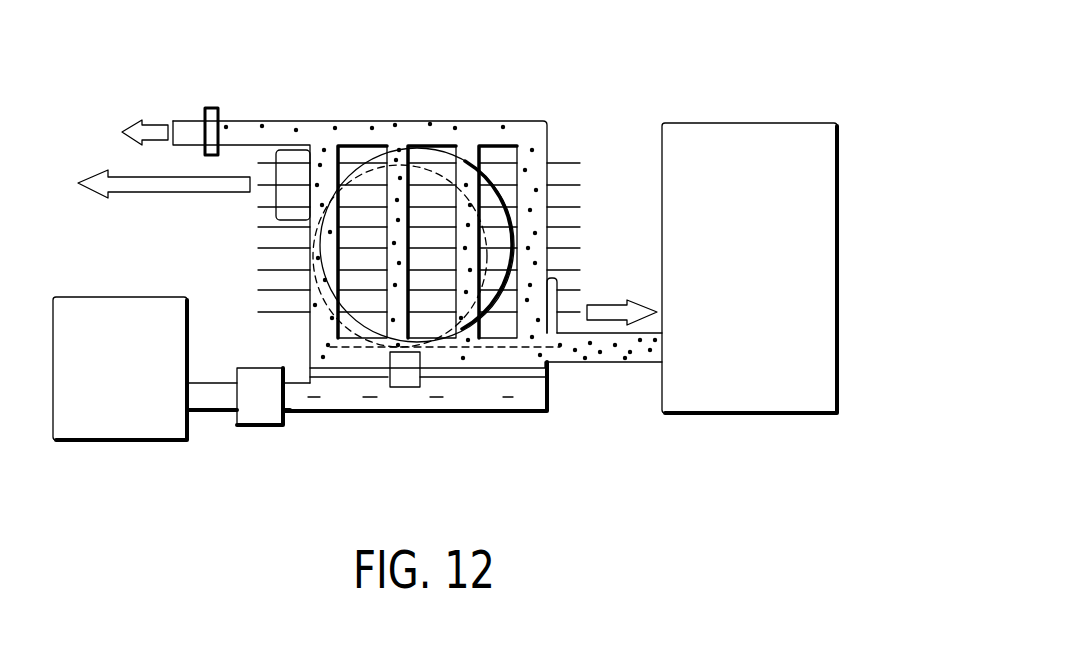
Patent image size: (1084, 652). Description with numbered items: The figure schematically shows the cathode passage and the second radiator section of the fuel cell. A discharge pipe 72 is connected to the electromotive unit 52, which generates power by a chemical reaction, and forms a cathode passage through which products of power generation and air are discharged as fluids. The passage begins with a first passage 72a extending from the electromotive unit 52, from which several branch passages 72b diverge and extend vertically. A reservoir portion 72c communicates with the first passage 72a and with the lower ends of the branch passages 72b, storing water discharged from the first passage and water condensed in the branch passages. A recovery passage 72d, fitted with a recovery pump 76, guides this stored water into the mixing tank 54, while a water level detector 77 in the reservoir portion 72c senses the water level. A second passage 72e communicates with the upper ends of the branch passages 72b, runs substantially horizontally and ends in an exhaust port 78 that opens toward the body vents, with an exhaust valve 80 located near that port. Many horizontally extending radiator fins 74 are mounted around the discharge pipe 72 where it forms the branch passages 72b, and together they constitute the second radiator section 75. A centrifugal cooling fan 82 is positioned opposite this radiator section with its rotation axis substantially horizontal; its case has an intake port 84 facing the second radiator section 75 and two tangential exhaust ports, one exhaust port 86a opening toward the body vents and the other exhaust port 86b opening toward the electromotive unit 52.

The discharge pipe 72 is at (557, 89).
The first passage 72a is at (634, 365).
The branch passages 72b is at (340, 160).
The reservoir portion 72c is at (487, 410).
The recovery passage 72d is at (208, 405).
The second passage 72e is at (318, 130).
The radiator fins 74 is at (558, 165).
The second radiator section 75 is at (239, 258).
The recovery pump 76 is at (264, 418).
The water level detector 77 is at (402, 388).
The exhaust port 78 is at (175, 124).
The exhaust valve 80 is at (210, 108).
The cooling fan 82 is at (357, 280).
The intake port 84 is at (520, 223).
The exhaust port 86a is at (273, 150).
The exhaust port 86b is at (560, 325).
The electromotive unit 52 is at (692, 395).
The mixing tank 54 is at (82, 425).